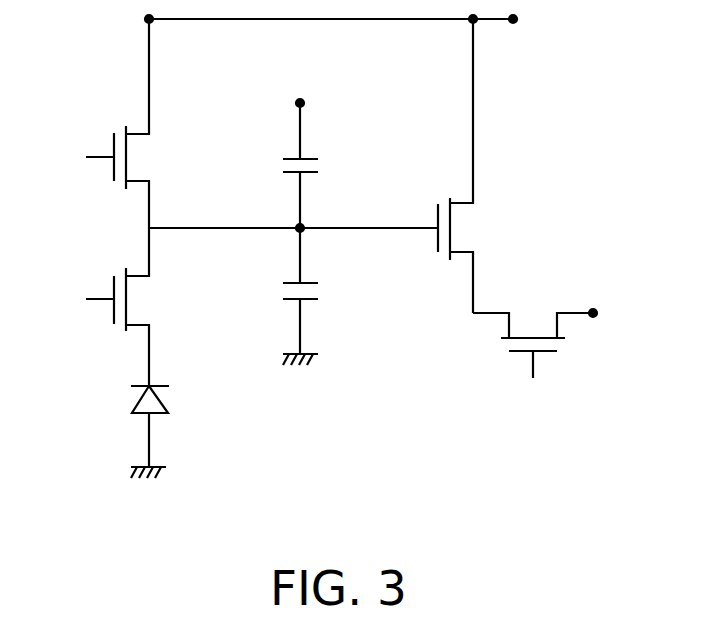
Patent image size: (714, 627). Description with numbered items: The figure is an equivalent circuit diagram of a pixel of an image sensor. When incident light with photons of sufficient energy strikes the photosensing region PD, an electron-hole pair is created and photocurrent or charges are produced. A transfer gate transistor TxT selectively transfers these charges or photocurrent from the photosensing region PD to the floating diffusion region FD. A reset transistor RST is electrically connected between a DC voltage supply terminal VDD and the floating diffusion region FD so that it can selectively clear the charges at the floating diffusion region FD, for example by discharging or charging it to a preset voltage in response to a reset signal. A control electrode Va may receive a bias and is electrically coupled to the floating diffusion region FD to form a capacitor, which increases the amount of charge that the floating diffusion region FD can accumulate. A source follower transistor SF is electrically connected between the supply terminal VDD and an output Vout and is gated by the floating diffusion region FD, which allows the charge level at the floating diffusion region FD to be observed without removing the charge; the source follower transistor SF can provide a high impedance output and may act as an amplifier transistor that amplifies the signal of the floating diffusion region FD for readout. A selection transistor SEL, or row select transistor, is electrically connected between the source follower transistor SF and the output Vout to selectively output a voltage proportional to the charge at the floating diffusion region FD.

The DC voltage supply terminal VDD is at (358, 18).
The reset transistor RST is at (90, 123).
The transfer gate transistor TxT is at (93, 307).
The photosensing region PD is at (171, 432).
The floating diffusion region FD is at (293, 279).
The control electrode Va is at (300, 146).
The source follower transistor SF is at (469, 166).
The selection transistor SEL is at (533, 368).
The output Vout is at (623, 313).